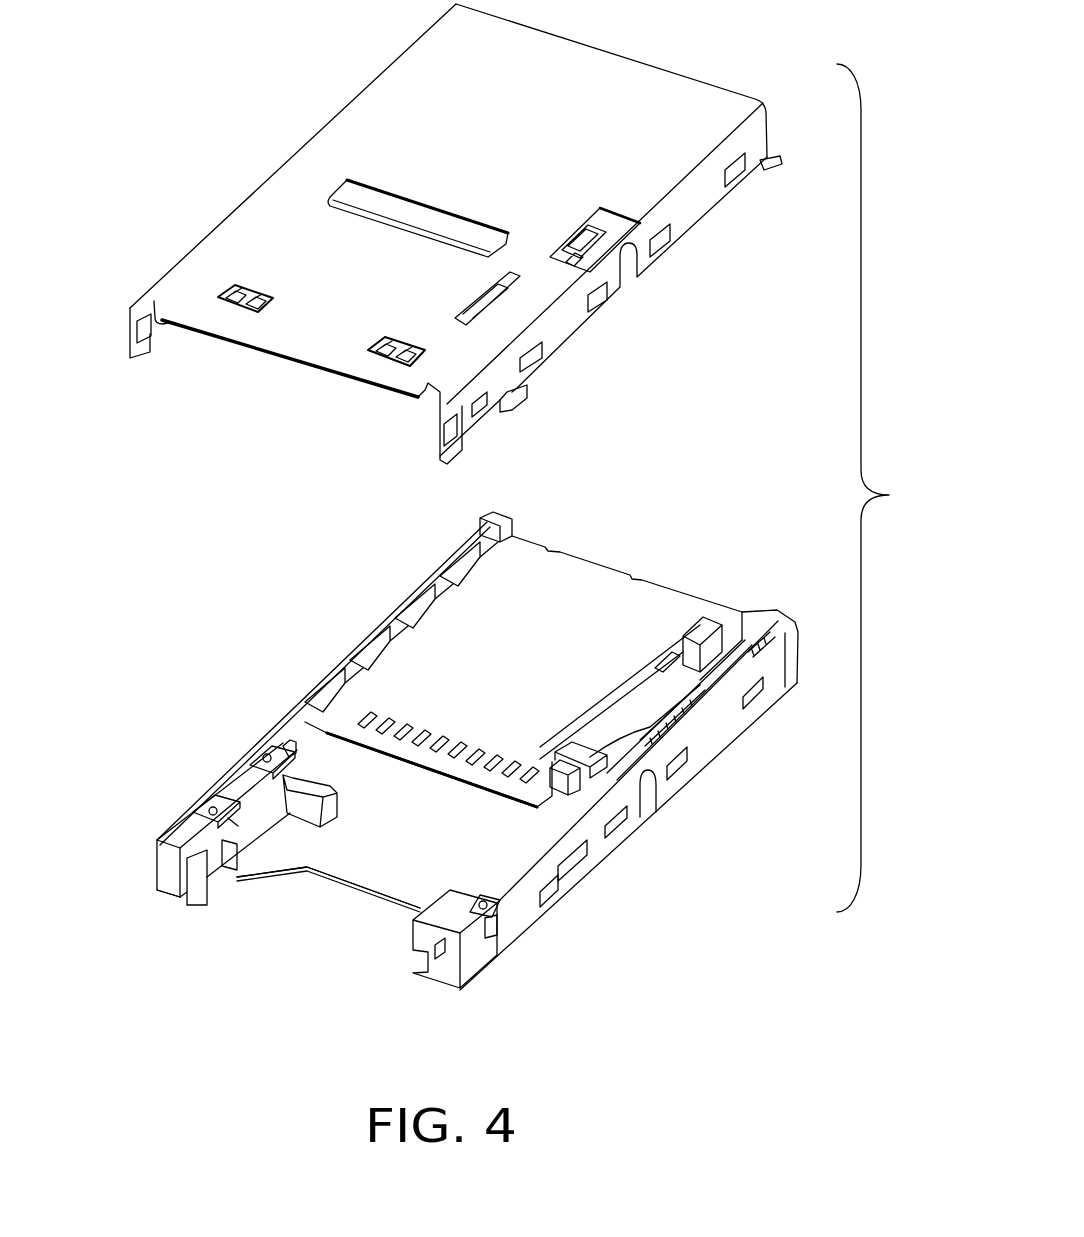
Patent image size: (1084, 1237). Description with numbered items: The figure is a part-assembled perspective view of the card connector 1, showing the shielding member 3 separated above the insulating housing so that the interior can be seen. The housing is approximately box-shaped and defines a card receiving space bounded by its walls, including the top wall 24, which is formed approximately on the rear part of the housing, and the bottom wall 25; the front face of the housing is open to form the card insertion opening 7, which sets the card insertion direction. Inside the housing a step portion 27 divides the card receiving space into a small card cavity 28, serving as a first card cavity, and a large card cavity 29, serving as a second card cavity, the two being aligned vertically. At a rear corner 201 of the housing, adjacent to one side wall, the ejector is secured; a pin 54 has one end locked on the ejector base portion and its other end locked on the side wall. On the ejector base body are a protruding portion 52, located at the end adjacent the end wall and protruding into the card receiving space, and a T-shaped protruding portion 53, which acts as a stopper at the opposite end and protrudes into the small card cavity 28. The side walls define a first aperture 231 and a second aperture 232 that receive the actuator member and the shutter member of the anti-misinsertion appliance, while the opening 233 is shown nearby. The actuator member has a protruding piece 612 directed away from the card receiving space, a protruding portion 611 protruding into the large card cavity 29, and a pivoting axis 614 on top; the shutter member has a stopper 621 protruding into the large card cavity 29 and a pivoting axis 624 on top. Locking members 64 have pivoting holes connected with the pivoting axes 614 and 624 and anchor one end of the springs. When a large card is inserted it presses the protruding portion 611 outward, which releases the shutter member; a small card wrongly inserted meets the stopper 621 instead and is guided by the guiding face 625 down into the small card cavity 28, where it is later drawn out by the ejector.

The card connector 1 is at (874, 488).
The shielding member 3 is at (652, 45).
The top wall 24 is at (585, 583).
The rear corner 201 is at (667, 675).
The protruding portion 52 is at (695, 638).
The T-shaped protruding portion 53 is at (682, 728).
The pin 54 is at (640, 813).
The second aperture 232 is at (567, 870).
The recess 233 is at (547, 910).
The first aperture 231 is at (497, 910).
The protruding piece 612 is at (495, 930).
The step portion 27 is at (413, 932).
The card insertion opening 7 is at (363, 860).
The bottom wall 25 is at (292, 850).
The protruding portion 611 is at (233, 882).
The large card cavity 29 is at (187, 895).
The small card cavity 28 is at (200, 860).
The locking member 64 is at (203, 815).
The pivoting axis 614 is at (211, 806).
The pivoting axis 624 is at (266, 758).
The guiding face 625 is at (292, 742).
The stopper 621 is at (307, 800).